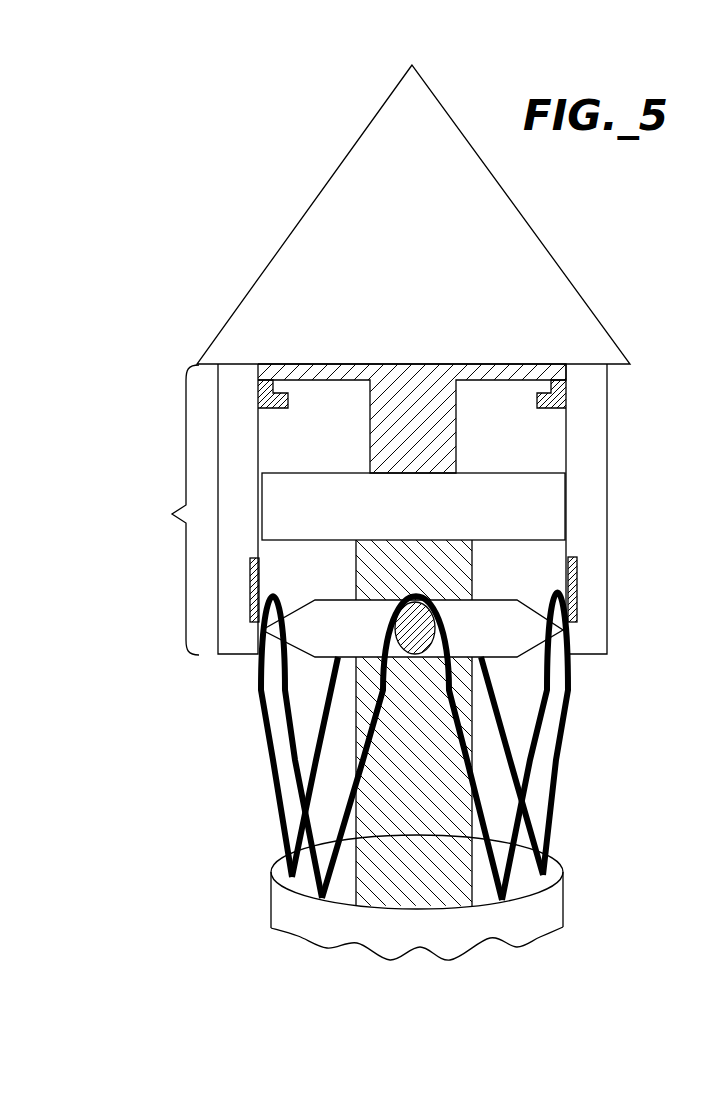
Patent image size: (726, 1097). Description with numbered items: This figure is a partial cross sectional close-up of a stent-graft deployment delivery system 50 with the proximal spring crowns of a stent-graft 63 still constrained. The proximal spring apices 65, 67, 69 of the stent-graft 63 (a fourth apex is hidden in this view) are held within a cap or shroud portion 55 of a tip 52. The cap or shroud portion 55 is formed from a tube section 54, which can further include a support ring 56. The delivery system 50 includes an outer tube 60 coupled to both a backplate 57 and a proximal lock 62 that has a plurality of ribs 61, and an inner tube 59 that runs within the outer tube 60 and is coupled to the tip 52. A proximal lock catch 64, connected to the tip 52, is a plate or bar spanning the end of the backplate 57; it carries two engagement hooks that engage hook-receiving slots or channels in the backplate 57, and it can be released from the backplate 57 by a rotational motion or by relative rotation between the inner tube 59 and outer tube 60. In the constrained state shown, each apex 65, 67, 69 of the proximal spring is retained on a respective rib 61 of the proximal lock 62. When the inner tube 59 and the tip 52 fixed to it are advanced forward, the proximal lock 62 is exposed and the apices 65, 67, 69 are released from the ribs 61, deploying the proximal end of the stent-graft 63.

The stent-graft deployment delivery system 50 is at (283, 203).
The tip 52 is at (517, 205).
The tube section 54 is at (597, 468).
The cap or shroud portion 55 is at (158, 510).
The support ring 56 is at (577, 610).
The backplate 57 is at (482, 482).
The inner tube 59 is at (453, 393).
The outer tube 60 is at (465, 552).
The rib 61 is at (396, 630).
The proximal lock 62 is at (340, 608).
The stent-graft 63 is at (270, 906).
The proximal lock catch 64 is at (288, 400).
The proximal spring apex 65 is at (290, 765).
The proximal spring apex 67 is at (482, 803).
The proximal spring apex 69 is at (536, 676).